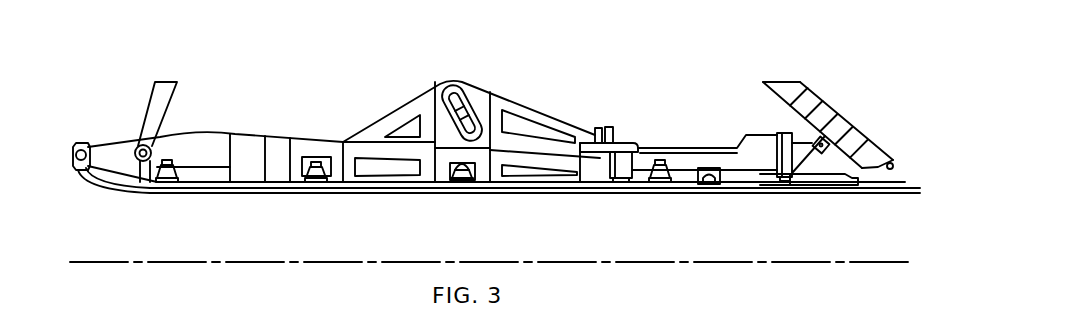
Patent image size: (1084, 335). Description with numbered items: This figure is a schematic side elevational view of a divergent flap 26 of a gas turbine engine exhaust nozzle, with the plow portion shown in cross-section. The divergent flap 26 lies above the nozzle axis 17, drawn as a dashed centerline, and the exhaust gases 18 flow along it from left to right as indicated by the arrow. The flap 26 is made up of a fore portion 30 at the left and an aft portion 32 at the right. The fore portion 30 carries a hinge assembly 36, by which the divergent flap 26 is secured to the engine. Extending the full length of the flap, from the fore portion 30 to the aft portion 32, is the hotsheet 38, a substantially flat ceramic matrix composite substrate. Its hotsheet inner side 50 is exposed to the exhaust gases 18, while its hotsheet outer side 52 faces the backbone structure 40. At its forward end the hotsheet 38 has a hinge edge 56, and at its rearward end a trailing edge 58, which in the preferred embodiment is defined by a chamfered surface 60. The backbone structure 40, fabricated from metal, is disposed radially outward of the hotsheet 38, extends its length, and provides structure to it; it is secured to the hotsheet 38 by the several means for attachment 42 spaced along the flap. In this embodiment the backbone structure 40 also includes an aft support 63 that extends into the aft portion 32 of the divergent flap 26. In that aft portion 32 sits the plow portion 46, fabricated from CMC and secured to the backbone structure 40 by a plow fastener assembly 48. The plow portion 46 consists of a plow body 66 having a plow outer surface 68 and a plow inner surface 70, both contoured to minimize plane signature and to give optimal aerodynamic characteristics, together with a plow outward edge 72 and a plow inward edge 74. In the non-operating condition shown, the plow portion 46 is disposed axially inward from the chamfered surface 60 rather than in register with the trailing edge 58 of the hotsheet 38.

The axis 17 is at (710, 260).
The exhaust gases 18 is at (342, 246).
The divergent flap 26 is at (539, 203).
The fore portion 30 is at (110, 199).
The aft portion 32 is at (872, 218).
The hinge assembly 36 is at (84, 142).
The hotsheet 38 is at (402, 194).
The backbone structure 40 is at (303, 103).
The means for attachment 42 is at (168, 184).
The plow portion 46 is at (842, 77).
The plow fastener assembly 48 is at (800, 128).
The hotsheet inner side 50 is at (661, 196).
The hotsheet outer side 52 is at (715, 186).
The hinge edge 56 is at (88, 180).
The trailing edge 58 is at (916, 194).
The chamfered surface 60 is at (922, 189).
The aft support 63 is at (840, 186).
The plow body 66 is at (807, 95).
The plow outer surface 68 is at (842, 114).
The plow inner surface 70 is at (778, 96).
The plow outward edge 72 is at (775, 79).
The plow inward edge 74 is at (897, 163).